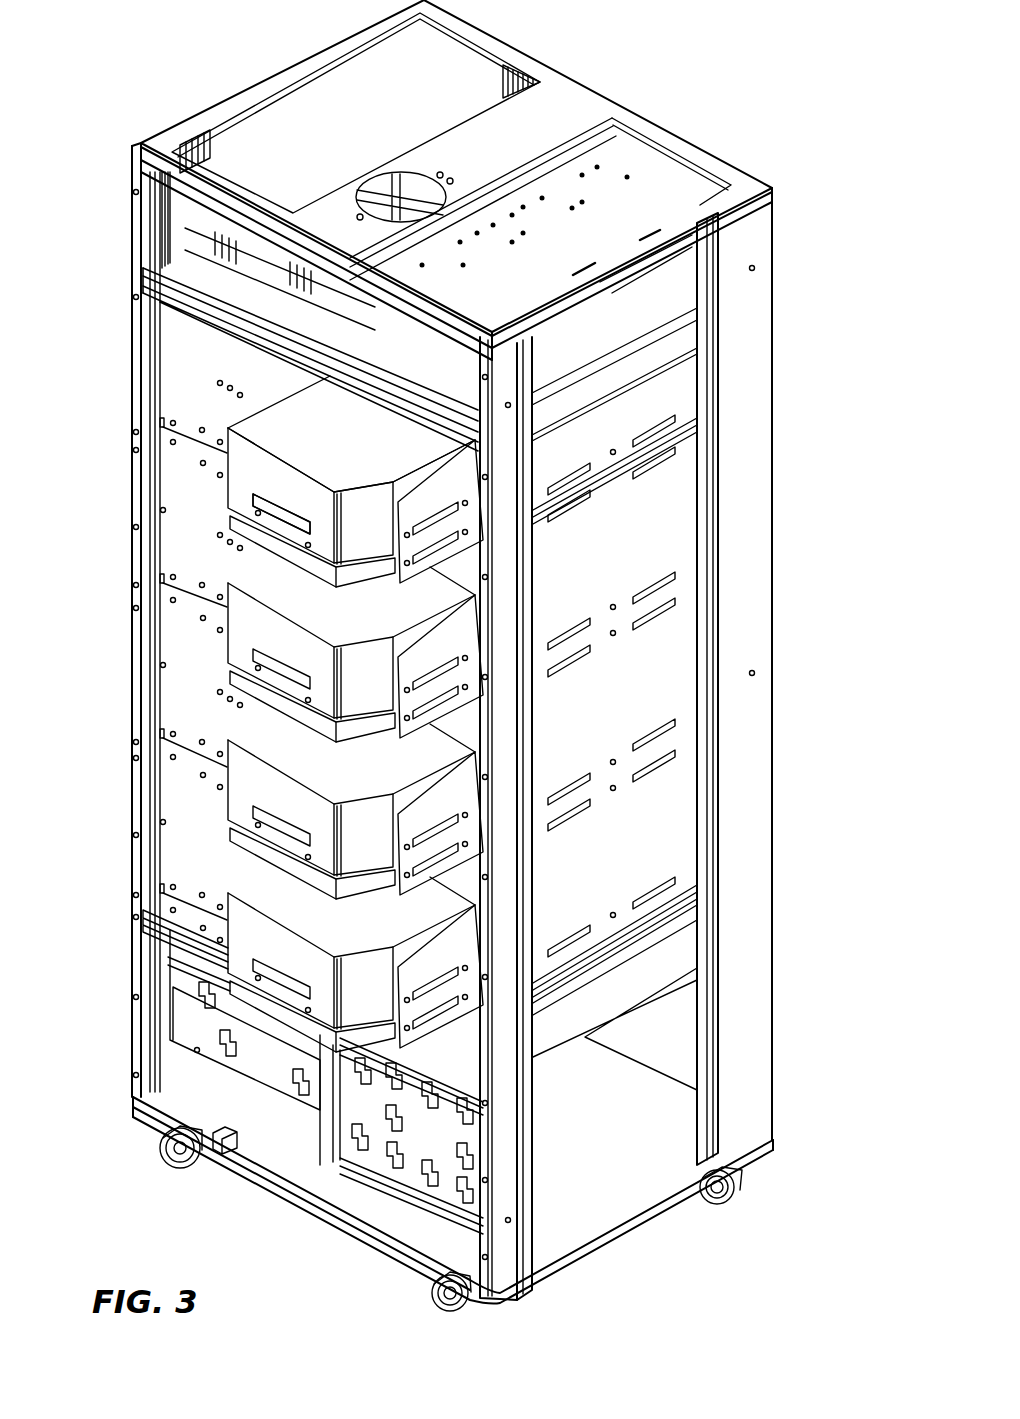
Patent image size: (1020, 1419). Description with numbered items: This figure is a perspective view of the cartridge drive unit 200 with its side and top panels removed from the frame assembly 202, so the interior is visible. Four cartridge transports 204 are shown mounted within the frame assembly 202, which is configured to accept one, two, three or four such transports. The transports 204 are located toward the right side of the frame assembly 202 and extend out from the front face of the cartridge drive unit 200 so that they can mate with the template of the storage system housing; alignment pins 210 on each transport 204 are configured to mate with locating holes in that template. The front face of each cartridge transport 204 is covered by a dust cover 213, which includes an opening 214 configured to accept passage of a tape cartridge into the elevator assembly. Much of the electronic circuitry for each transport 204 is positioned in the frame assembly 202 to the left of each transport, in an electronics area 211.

The cartridge drive unit 200 is at (845, 180).
The frame assembly 202 is at (756, 587).
The cartridge transport 204 is at (230, 465).
The alignment pin 210 is at (309, 545).
The electronics area 211 is at (176, 374).
The dust cover 213 is at (282, 412).
The opening 214 is at (277, 502).